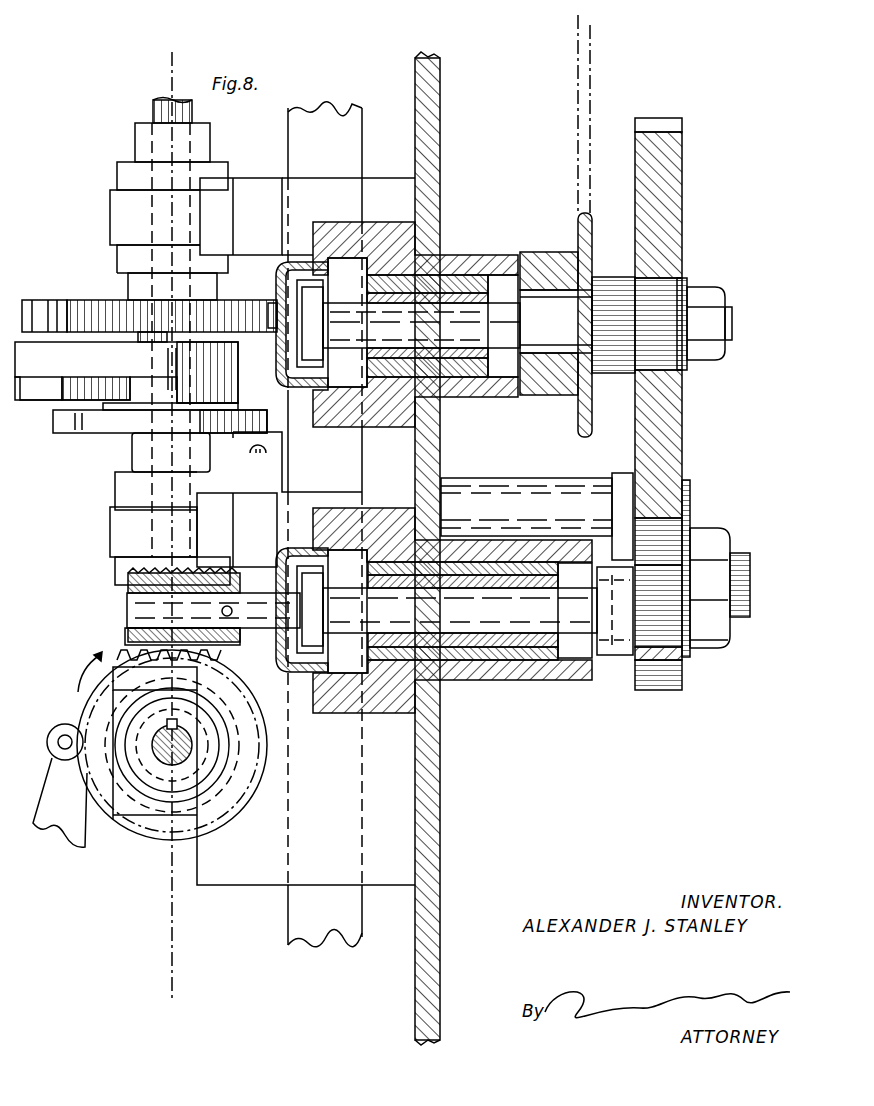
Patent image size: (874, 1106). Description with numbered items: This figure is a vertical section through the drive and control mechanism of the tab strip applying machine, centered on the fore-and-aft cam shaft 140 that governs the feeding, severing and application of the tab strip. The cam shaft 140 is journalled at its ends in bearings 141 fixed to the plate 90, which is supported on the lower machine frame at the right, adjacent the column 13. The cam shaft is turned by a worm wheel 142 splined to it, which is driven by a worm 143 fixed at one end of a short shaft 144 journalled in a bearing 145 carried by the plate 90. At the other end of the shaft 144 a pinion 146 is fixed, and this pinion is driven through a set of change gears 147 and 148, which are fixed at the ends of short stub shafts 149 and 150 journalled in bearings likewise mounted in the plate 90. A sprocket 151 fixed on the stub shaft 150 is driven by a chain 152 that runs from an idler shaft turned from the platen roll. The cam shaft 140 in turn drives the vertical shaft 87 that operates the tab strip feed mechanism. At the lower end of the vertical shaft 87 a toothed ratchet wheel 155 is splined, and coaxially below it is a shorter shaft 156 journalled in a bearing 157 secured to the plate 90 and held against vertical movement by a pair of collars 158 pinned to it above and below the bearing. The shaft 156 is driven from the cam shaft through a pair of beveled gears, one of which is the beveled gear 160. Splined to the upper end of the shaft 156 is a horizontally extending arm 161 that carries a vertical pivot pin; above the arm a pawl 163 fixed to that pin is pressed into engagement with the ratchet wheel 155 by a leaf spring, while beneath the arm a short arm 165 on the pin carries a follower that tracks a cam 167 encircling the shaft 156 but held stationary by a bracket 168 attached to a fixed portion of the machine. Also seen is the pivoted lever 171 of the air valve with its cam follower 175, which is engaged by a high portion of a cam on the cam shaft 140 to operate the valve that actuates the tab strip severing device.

The column 13 is at (290, 925).
The vertical shaft 87 is at (153, 112).
The plate 90 is at (432, 786).
The cam shaft 140 is at (168, 762).
The bearings 141 is at (218, 885).
The worm wheel 142 is at (120, 662).
The worm 143 is at (128, 588).
The short shaft 144 is at (255, 612).
The bearing 145 is at (483, 640).
The pinion 146 is at (665, 662).
The change gear 147 is at (660, 686).
The change gear 148 is at (668, 452).
The stub shaft 149 is at (742, 582).
The stub shaft 150 is at (465, 352).
The sprocket 151 is at (555, 390).
The chain 152 is at (578, 160).
The toothed ratchet wheel 155 is at (93, 312).
The shorter shaft 156 is at (148, 528).
The bearing 157 is at (237, 530).
The collars 158 is at (138, 450).
The beveled gear 160 is at (232, 700).
The arm 161 is at (126, 376).
The pawl 163 is at (30, 300).
The short arm 165 is at (33, 403).
The cam 167 is at (100, 430).
The bracket 168 is at (283, 463).
The lever 171 is at (46, 826).
The cam follower 175 is at (54, 736).